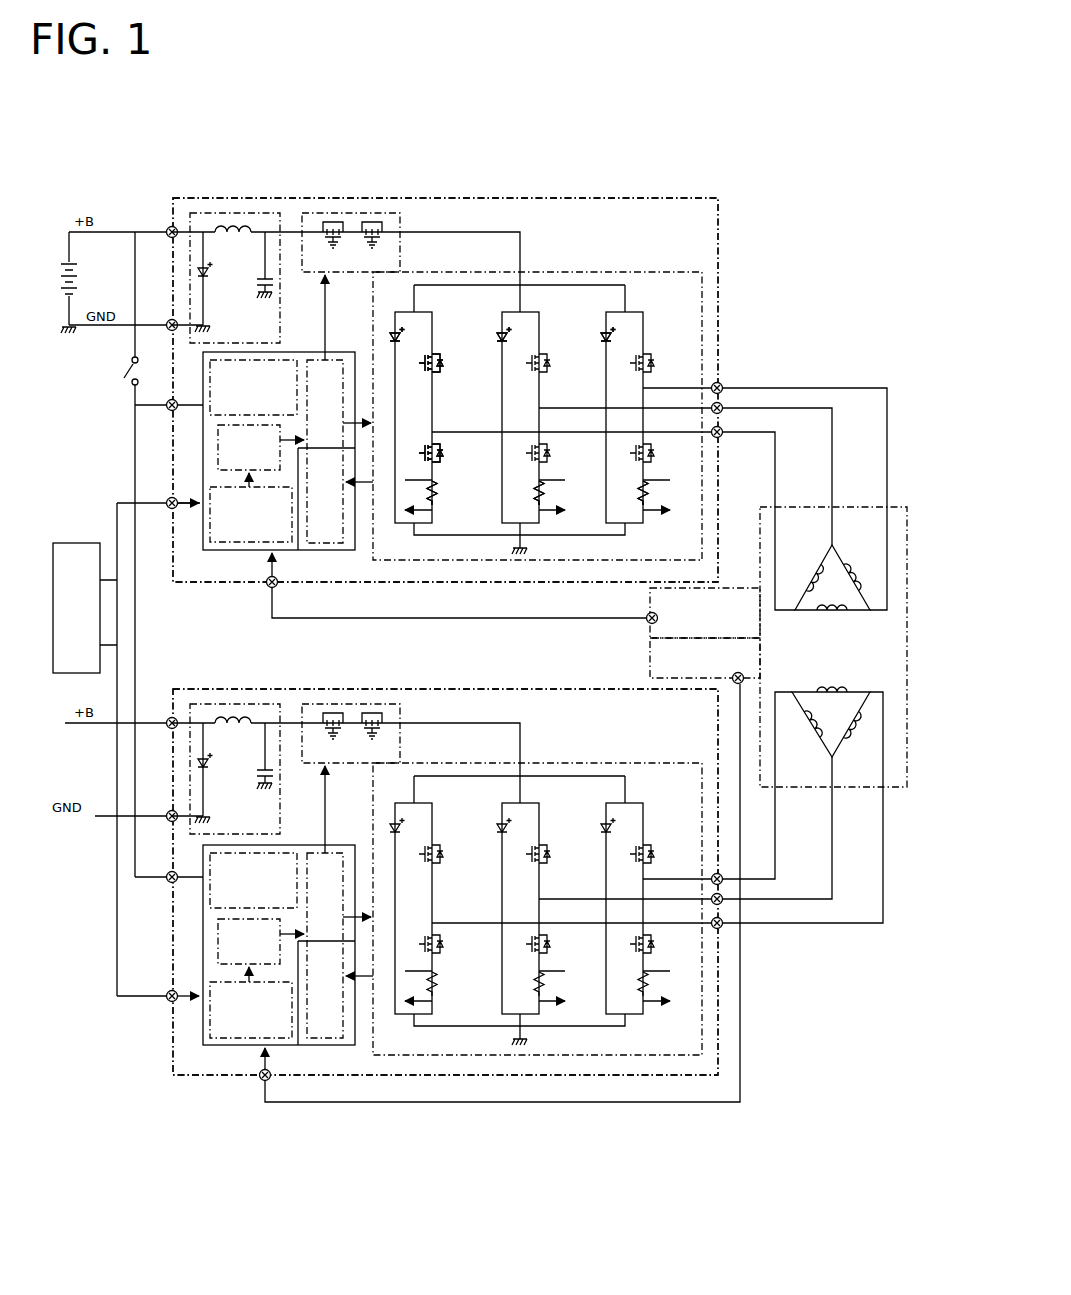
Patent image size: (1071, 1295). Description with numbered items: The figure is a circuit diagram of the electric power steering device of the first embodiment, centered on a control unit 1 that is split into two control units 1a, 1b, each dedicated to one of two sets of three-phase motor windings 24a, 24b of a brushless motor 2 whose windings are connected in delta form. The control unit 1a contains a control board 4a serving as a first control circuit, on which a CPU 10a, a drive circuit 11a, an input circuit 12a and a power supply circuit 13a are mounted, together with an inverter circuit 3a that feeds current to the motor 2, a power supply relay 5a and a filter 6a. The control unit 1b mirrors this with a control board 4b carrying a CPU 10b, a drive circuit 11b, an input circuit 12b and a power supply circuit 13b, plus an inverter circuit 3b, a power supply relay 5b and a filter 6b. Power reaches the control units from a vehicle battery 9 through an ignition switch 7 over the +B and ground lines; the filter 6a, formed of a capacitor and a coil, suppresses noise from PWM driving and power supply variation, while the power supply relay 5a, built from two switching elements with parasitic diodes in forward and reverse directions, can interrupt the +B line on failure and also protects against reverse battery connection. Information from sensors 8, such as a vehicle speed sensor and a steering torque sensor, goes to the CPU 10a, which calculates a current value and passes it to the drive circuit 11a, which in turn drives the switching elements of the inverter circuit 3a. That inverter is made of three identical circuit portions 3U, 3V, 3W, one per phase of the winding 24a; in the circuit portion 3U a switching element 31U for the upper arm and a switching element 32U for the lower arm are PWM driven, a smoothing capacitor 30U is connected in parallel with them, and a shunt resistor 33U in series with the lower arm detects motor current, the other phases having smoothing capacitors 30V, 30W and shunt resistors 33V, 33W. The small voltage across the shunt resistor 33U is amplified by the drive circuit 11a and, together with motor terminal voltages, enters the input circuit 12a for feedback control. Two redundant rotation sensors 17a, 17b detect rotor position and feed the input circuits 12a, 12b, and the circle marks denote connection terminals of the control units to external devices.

The control unit 1 is at (684, 158).
The control unit 1a is at (540, 197).
The control unit 1b is at (445, 932).
The motor 2 is at (845, 505).
The circuit portion 3U is at (405, 305).
The circuit portion 3V is at (533, 305).
The circuit portion 3W is at (637, 306).
The inverter circuit 3a is at (400, 562).
The inverter circuit 3b is at (537, 851).
The control board 4a is at (240, 552).
The control board 4b is at (274, 992).
The power supply relay 5a is at (360, 212).
The power supply relay 5b is at (355, 700).
The filter 6a is at (215, 212).
The filter 6b is at (174, 769).
The ignition switch 7 is at (128, 372).
The sensors 8 is at (60, 676).
The battery 9 is at (69, 240).
The CPU 10a is at (201, 431).
The CPU 10b is at (181, 905).
The drive circuit 11a is at (325, 553).
The drive circuit 11b is at (321, 1010).
The input circuit 12a is at (203, 545).
The input circuit 12b is at (192, 1028).
The power supply circuit 13a is at (283, 352).
The power supply circuit 13b is at (264, 878).
The rotation sensor 17a is at (652, 592).
The rotation sensor 17b is at (650, 645).
The motor winding 24a is at (868, 572).
The motor winding 24b is at (868, 732).
The smoothing capacitor 30U is at (392, 332).
The smoothing capacitor 30V is at (500, 343).
The smoothing capacitor 30W is at (603, 343).
The switching element for upper arm 31U is at (442, 360).
The switching element for lower arm 32U is at (442, 460).
The shunt resistor 33U is at (440, 500).
The shunt resistor 33V is at (546, 500).
The shunt resistor 33W is at (656, 493).